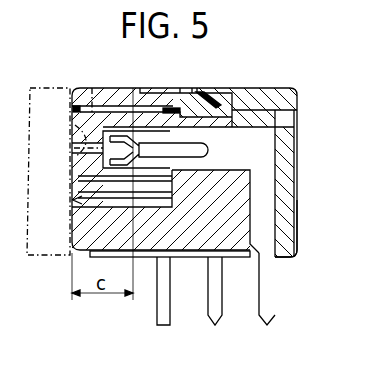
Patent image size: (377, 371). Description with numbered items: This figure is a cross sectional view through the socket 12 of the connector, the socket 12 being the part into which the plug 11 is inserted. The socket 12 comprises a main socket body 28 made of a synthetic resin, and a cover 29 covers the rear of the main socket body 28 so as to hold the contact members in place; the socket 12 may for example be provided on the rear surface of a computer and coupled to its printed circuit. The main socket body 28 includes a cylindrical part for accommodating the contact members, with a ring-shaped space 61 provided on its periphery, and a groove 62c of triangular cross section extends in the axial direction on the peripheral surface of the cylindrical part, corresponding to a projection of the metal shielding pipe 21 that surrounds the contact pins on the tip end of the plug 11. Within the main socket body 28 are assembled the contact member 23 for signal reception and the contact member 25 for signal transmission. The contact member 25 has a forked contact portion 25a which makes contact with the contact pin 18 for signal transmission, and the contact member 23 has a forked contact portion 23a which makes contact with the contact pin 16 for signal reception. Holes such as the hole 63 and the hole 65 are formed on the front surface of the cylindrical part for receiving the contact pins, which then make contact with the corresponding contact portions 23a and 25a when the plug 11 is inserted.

The plug 11 is at (44, 86).
The socket 12 is at (294, 75).
The contact pin for signal reception 16 is at (73, 123).
The contact pin for signal transmission 18 is at (61, 122).
The metal shielding pipe 21 is at (88, 87).
The contact member for signal reception 23 is at (268, 143).
The contact portion 23a is at (148, 96).
The contact member for signal transmission 25 is at (287, 183).
The contact portion 25a is at (198, 153).
The main socket body 28 is at (106, 86).
The cover 29 is at (296, 200).
The ring-shaped space 61 is at (139, 87).
The groove 62c is at (82, 188).
The hole 63 is at (74, 148).
The hole 65 is at (118, 159).